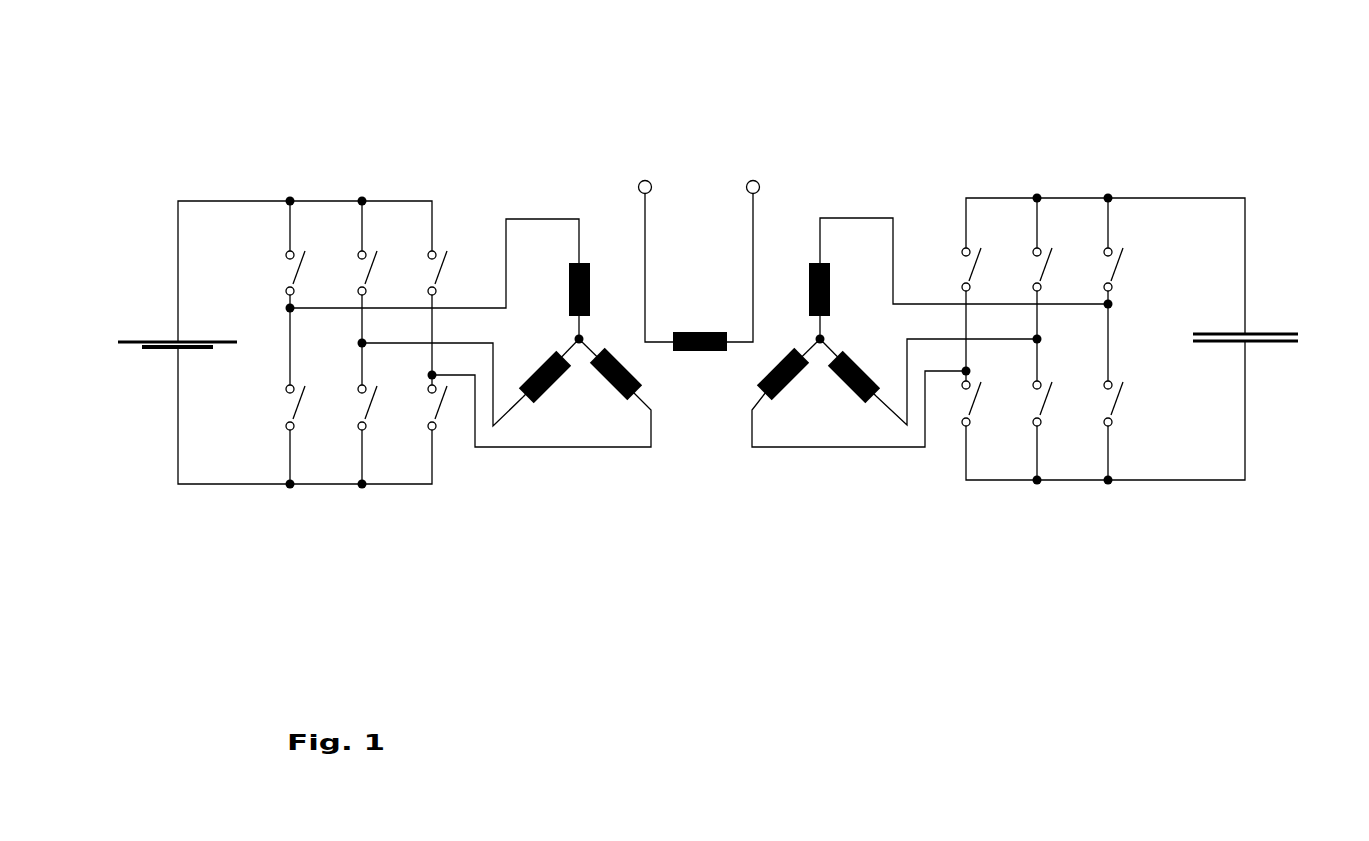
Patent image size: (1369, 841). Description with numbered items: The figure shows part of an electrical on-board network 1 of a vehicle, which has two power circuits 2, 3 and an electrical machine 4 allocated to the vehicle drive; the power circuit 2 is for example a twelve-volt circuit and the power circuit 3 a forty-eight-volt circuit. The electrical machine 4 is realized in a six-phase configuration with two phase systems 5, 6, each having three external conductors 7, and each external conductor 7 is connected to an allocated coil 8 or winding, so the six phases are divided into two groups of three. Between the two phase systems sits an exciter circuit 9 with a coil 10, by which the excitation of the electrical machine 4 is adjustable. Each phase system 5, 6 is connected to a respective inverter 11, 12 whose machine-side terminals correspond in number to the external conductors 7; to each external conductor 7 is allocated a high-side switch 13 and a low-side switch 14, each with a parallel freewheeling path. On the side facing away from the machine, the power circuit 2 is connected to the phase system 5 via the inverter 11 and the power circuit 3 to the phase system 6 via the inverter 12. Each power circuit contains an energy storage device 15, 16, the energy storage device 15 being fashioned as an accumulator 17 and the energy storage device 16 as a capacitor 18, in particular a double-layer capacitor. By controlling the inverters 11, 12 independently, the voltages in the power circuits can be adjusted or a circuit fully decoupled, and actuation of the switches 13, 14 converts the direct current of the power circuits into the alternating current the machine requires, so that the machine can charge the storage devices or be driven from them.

The on-board network 1 is at (830, 72).
The power circuit 2 is at (252, 150).
The power circuit 3 is at (1208, 158).
The electrical machine 4 is at (687, 492).
The phase system 5 is at (544, 494).
The phase system 6 is at (845, 514).
The external conductor 7 is at (538, 219).
The coil 8 is at (586, 264).
The exciter circuit 9 is at (693, 166).
The coil 10 is at (693, 330).
The inverter 11 is at (361, 142).
The inverter 12 is at (1089, 168).
The high-side switch 13 is at (286, 270).
The low-side switch 14 is at (289, 407).
The energy storage device 15 is at (162, 352).
The energy storage device 16 is at (1268, 357).
The accumulator 17 is at (177, 344).
The capacitor 18 is at (1245, 337).